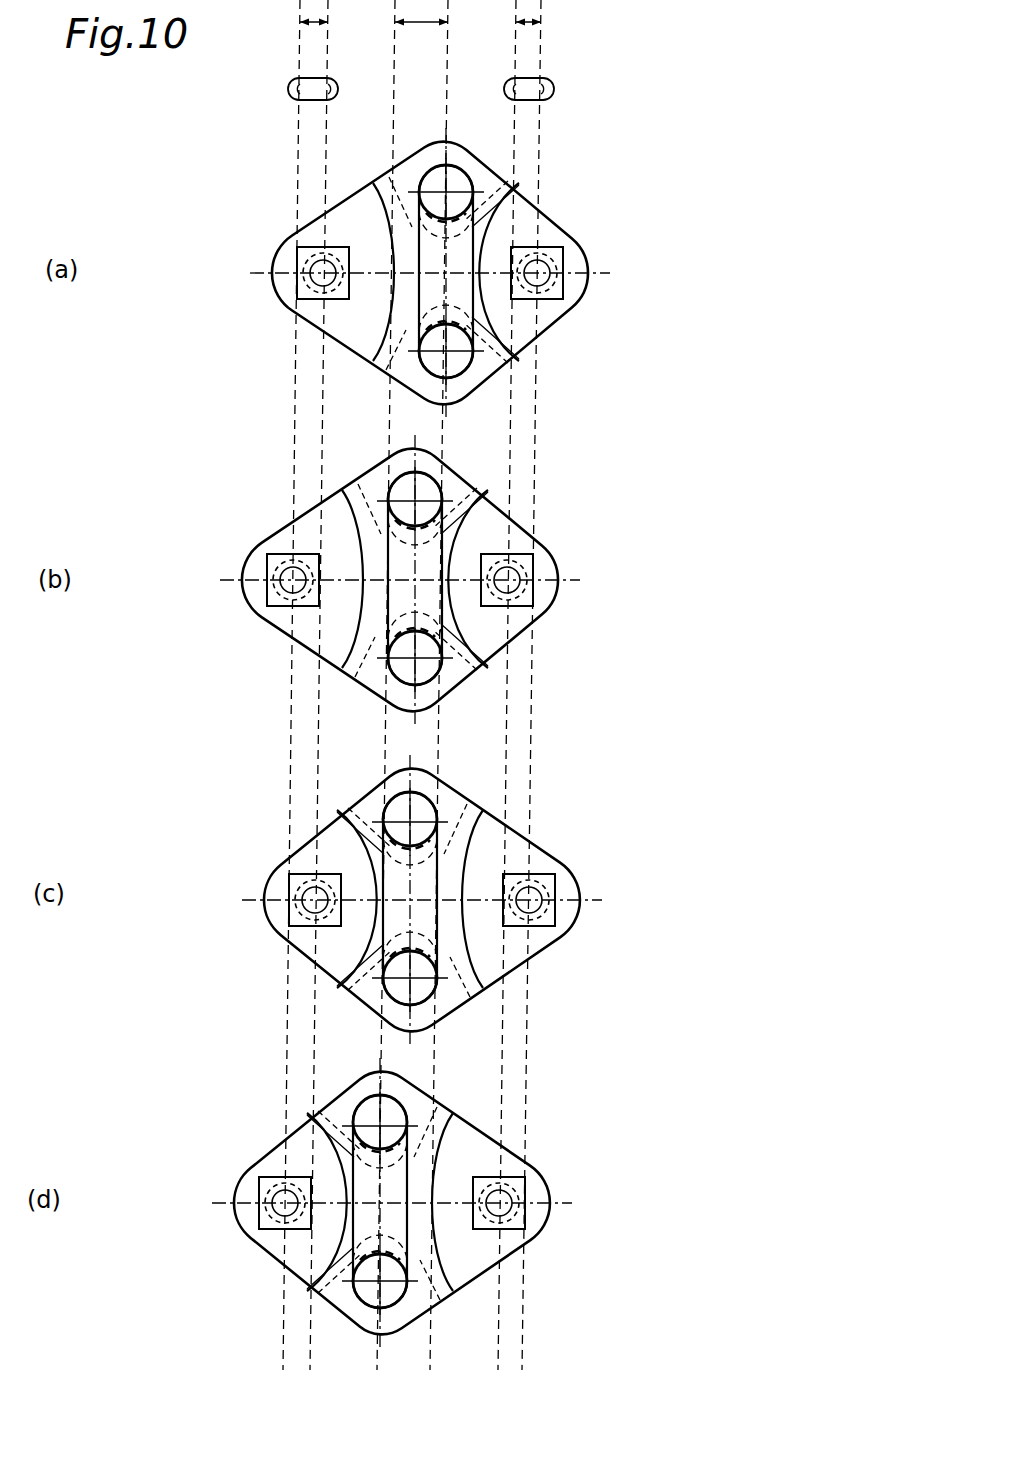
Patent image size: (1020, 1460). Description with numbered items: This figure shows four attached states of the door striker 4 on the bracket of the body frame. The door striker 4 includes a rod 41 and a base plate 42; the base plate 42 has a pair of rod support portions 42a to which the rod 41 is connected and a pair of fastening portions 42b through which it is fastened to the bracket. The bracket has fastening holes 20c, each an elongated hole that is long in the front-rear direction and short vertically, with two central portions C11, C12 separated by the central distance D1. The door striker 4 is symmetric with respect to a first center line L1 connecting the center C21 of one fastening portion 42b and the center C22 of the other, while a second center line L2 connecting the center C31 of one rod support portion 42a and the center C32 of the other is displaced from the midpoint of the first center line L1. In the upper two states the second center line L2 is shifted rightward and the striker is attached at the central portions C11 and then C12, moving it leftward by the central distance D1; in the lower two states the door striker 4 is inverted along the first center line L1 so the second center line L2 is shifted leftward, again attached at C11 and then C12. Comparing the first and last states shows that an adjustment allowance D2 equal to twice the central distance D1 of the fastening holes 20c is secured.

The door striker 4 is at (558, 193).
The rod 41 is at (487, 205).
The base plate 42 is at (515, 200).
The rod support portions 42a is at (460, 180).
The fastening portions 42b is at (298, 299).
The fastening holes 20c is at (289, 92).
The central portion C11 is at (328, 88).
The central portion C12 is at (300, 88).
The center of fastening portion C21 is at (318, 268).
The center of fastening portion C22 is at (540, 270).
The center of rod support portion C31 is at (446, 190).
The center of rod support portion C32 is at (442, 352).
The central distance D1 is at (422, 13).
The adjustment allowance D2 is at (421, 13).
The first center line L1 is at (429, 739).
The second center line L2 is at (411, 729).